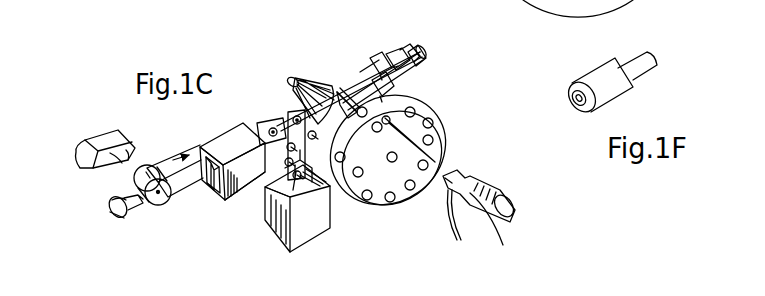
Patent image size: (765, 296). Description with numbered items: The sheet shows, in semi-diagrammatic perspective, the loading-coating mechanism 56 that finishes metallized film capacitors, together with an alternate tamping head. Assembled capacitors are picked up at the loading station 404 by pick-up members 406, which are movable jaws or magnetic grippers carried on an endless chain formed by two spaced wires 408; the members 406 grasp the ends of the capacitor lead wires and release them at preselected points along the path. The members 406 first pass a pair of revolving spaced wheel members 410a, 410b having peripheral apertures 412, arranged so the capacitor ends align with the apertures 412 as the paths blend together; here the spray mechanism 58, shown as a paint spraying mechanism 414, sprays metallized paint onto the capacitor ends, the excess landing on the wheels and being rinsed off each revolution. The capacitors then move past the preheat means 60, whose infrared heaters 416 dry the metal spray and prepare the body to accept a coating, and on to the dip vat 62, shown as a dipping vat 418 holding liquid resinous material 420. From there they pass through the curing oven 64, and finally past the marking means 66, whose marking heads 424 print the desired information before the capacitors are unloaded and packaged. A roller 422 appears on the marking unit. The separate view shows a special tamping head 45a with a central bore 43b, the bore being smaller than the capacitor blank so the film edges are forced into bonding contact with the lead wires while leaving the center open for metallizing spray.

In FIG. 1C, the marking means 66 is at (91, 128).
In FIG. 1C, the marking heads 424 is at (143, 157).
In FIG. 1C, the roller 422 is at (161, 198).
In FIG. 1C, the pick-up members 406 is at (140, 208).
In FIG. 1C, the curing oven 64 is at (222, 206).
In FIG. 1C, the spaced wires 408 is at (206, 140).
In FIG. 1C, the liquid resinous material 420 is at (259, 201).
In FIG. 1C, the preheat means 60 is at (282, 44).
In FIG. 1C, the infrared heaters 416 is at (292, 78).
In FIG. 1C, the loading-coating mechanism 56 is at (460, 11).
In FIG. 1C, the loading station 404 is at (415, 38).
In FIG. 1C, the revolving spaced wheel member 410b is at (407, 100).
In FIG. 1C, the revolving spaced wheel member 410a is at (433, 153).
In FIG. 1C, the peripheral apertures 412 is at (430, 125).
In FIG. 1C, the spray mechanism 58 is at (403, 211).
In FIG. 1C, the paint spraying mechanism 414 is at (503, 190).
In FIG. 1C, the dipping vat 418 is at (312, 228).
In FIG. 1C, the dip vat 62 is at (291, 255).
In FIG. 1F, the special tamping head 45a is at (603, 72).
In FIG. 1F, the plug socket 43b is at (574, 100).